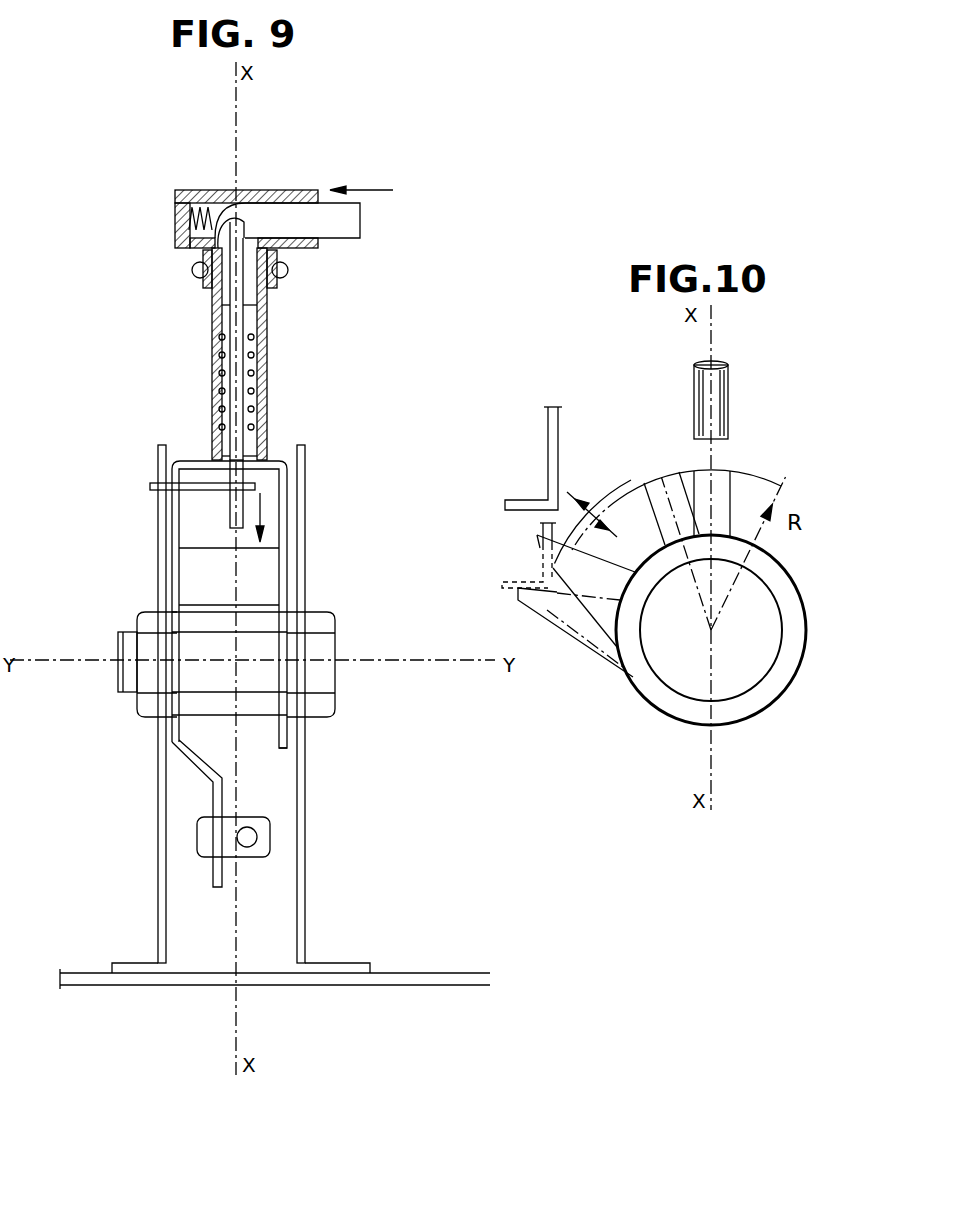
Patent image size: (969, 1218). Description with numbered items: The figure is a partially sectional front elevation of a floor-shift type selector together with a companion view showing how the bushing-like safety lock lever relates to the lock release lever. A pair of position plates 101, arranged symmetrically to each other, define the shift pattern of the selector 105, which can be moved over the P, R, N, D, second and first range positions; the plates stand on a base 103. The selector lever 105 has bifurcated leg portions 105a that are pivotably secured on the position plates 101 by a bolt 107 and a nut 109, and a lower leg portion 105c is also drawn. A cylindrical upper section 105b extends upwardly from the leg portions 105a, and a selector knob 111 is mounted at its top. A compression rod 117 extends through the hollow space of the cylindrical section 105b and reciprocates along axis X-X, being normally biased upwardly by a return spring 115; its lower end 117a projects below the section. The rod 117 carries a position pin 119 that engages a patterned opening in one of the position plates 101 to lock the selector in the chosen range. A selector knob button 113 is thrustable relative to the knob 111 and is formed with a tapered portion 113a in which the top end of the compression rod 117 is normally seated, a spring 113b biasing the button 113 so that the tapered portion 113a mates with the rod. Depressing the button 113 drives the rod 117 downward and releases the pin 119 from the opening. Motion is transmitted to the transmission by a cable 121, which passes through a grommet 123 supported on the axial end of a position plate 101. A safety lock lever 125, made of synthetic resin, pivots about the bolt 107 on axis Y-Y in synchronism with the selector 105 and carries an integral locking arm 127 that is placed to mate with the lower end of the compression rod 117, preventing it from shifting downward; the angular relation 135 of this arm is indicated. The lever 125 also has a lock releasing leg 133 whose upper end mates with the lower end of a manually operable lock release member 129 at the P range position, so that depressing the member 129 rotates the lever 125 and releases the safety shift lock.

In FIG. 9, the position plates 101 is at (310, 806).
In FIG. 9, the base plate 103 is at (412, 988).
In FIG. 9, the selector lever 105 is at (200, 377).
In FIG. 9, the bifurcated leg portions 105a is at (288, 493).
In FIG. 9, the cylindrical upper section 105b is at (200, 270).
In FIG. 9, the lower bracket leg 105c is at (222, 802).
In FIG. 9, the bolt 107 is at (337, 664).
In FIG. 10, the bolt 107 is at (752, 674).
In FIG. 9, the nut 109 is at (152, 705).
In FIG. 9, the selector knob 111 is at (226, 190).
In FIG. 9, the selector knob button 113 is at (340, 236).
In FIG. 9, the tapered portion 113a is at (220, 234).
In FIG. 9, the spring 113b is at (190, 222).
In FIG. 9, the return spring 115 is at (215, 418).
In FIG. 9, the compression rod 117 is at (262, 388).
In FIG. 9, the pin 117a is at (230, 517).
In FIG. 10, the pin 117a is at (728, 383).
In FIG. 9, the position pin 119 is at (150, 487).
In FIG. 9, the cable 121 is at (258, 840).
In FIG. 9, the grommet 123 is at (250, 862).
In FIG. 10, the safety lock lever 125 is at (798, 630).
In FIG. 9, the locking arm 127 is at (277, 566).
In FIG. 10, the locking arm 127 is at (722, 490).
In FIG. 10, the lock release member 129 is at (548, 439).
In FIG. 10, the lock releasing leg 133 is at (542, 548).
In FIG. 10, the angular gap 135 is at (656, 520).